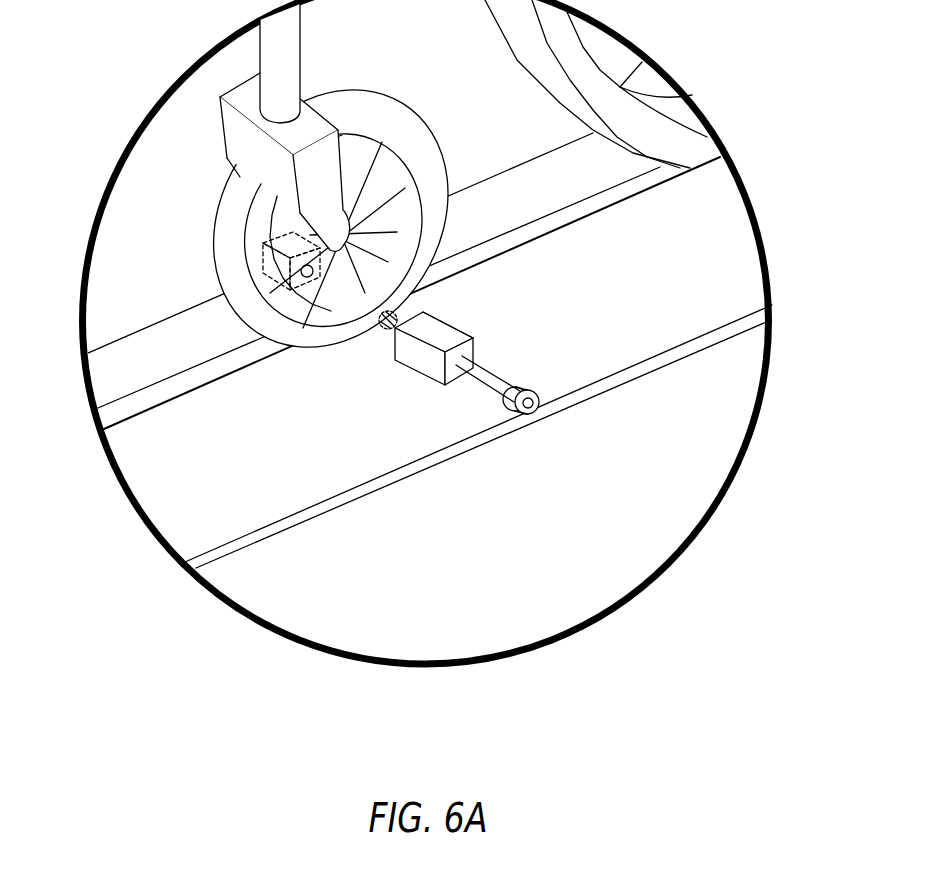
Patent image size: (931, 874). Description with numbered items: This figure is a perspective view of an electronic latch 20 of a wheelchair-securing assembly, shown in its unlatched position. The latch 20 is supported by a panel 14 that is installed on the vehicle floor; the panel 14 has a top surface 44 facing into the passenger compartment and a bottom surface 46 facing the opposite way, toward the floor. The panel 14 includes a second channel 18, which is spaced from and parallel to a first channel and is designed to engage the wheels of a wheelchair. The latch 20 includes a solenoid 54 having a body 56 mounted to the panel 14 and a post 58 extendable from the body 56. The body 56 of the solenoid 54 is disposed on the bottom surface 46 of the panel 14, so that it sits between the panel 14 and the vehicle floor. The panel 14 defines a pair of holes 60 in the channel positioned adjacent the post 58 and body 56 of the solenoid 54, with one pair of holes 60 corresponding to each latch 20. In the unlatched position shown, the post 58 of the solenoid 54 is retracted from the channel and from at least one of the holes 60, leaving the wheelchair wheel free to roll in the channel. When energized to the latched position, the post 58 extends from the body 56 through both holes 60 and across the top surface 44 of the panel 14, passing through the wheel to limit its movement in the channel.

The panel 14 is at (364, 508).
The second channel 18 is at (153, 395).
The latch 20 is at (452, 360).
The top surface 44 is at (183, 507).
The bottom surface 46 is at (695, 353).
The solenoid 54 is at (447, 318).
The body 56 is at (423, 357).
The post 58 is at (473, 383).
The holes 60 is at (267, 290).